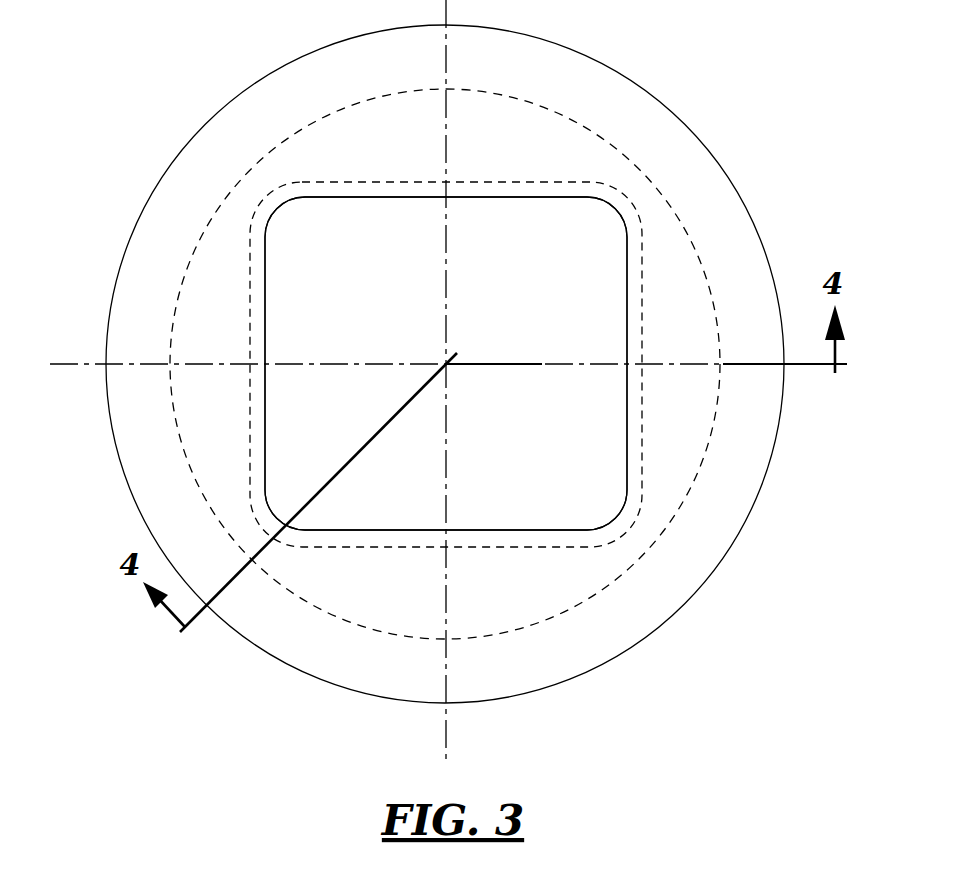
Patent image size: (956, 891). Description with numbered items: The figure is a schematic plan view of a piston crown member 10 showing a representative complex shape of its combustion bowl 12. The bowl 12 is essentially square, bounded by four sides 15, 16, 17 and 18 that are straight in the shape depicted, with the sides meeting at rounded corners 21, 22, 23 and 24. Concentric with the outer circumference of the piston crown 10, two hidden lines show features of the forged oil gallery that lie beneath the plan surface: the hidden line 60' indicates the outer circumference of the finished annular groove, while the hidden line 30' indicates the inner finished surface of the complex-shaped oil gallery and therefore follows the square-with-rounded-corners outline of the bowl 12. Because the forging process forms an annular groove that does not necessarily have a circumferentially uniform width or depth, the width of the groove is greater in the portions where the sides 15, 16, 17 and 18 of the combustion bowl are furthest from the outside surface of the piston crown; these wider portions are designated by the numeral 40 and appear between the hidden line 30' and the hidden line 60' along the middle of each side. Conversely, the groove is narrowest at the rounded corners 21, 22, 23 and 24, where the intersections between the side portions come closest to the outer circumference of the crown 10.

The piston crown member 10 is at (135, 230).
The combustion bowl 12 is at (446, 363).
The side 15 is at (266, 292).
The side 16 is at (497, 197).
The side 17 is at (626, 402).
The side 18 is at (417, 530).
The rounded corner 21 is at (290, 519).
The rounded corner 22 is at (285, 205).
The rounded corner 23 is at (603, 207).
The rounded corner 24 is at (610, 515).
The hidden line 30' is at (474, 389).
The areas 40 is at (447, 359).
The hidden line 60' is at (445, 364).